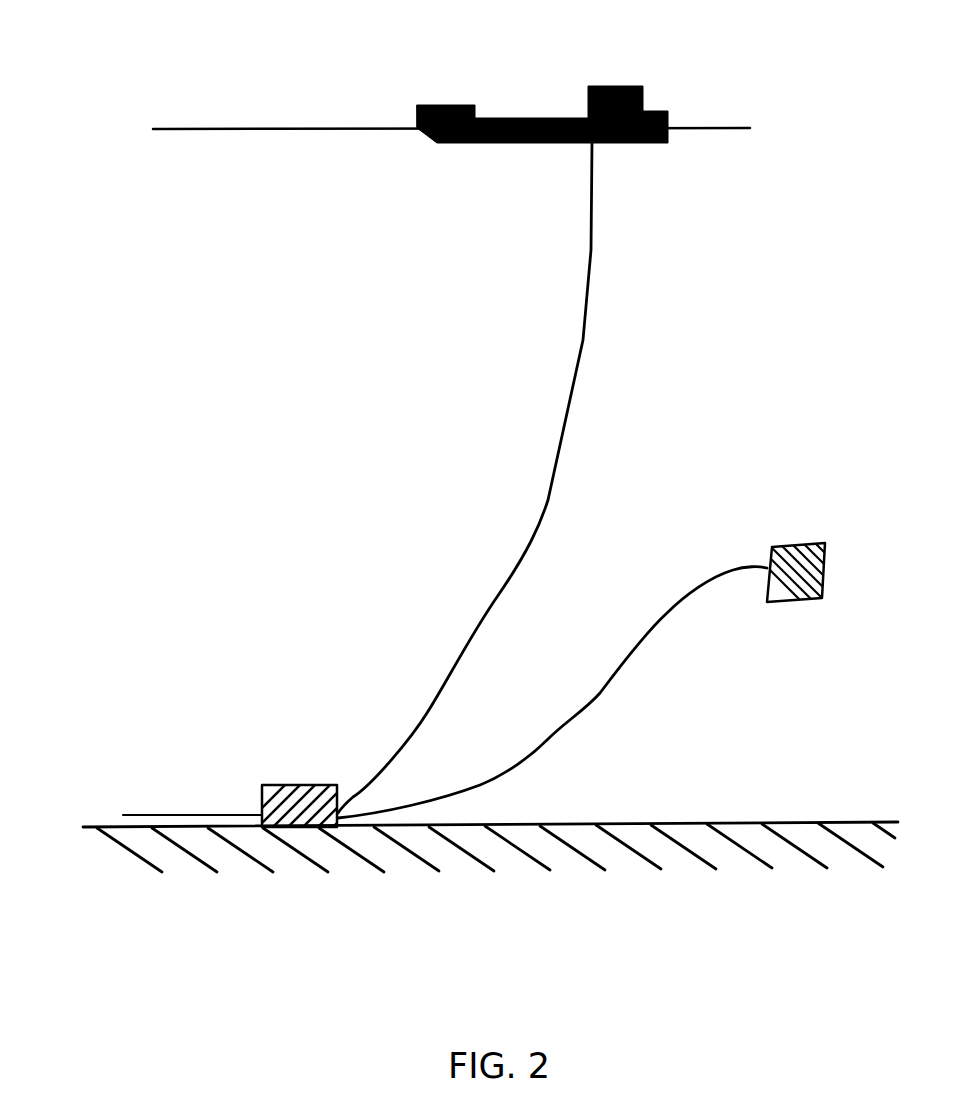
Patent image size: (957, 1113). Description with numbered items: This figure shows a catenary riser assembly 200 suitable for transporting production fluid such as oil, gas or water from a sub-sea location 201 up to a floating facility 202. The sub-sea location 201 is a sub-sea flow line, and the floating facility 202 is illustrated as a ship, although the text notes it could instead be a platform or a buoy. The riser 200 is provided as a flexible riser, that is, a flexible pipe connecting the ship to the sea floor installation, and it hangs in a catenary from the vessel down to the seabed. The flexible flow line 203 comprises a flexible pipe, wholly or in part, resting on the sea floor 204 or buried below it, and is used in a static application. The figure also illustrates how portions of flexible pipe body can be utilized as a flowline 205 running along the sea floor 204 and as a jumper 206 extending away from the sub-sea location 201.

The riser assembly 200 is at (550, 478).
The sub-sea location 201 is at (280, 787).
The floating facility 202 is at (428, 106).
The flexible flow line 203 is at (460, 663).
The sea floor 204 is at (738, 822).
The flowline 205 is at (179, 815).
The jumper 206 is at (632, 650).